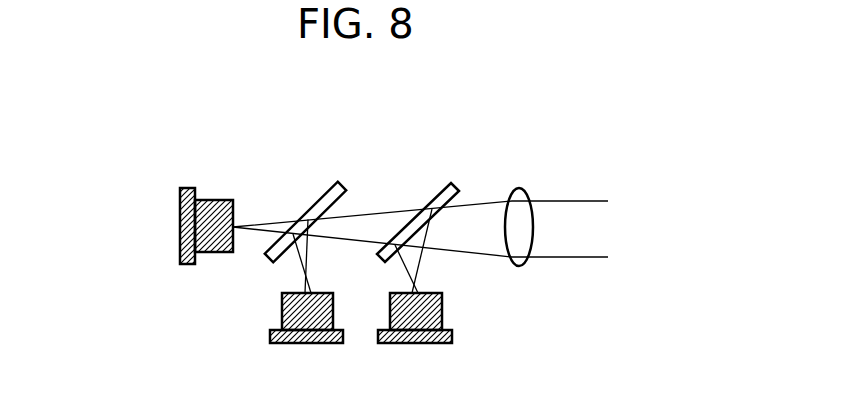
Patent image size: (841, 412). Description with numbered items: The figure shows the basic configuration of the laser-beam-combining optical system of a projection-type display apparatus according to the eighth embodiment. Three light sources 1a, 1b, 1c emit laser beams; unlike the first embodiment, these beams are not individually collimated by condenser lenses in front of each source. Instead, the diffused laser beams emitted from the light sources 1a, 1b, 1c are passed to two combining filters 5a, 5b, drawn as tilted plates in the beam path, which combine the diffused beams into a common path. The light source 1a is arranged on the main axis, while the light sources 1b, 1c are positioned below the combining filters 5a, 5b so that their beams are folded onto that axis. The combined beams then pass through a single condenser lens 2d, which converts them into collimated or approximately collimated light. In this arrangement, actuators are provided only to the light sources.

The light source 1a is at (180, 213).
The light source 1b is at (313, 345).
The light source 1c is at (423, 345).
The combining filter 5a is at (350, 180).
The combining filter 5b is at (455, 180).
The condenser lens 2d is at (519, 266).